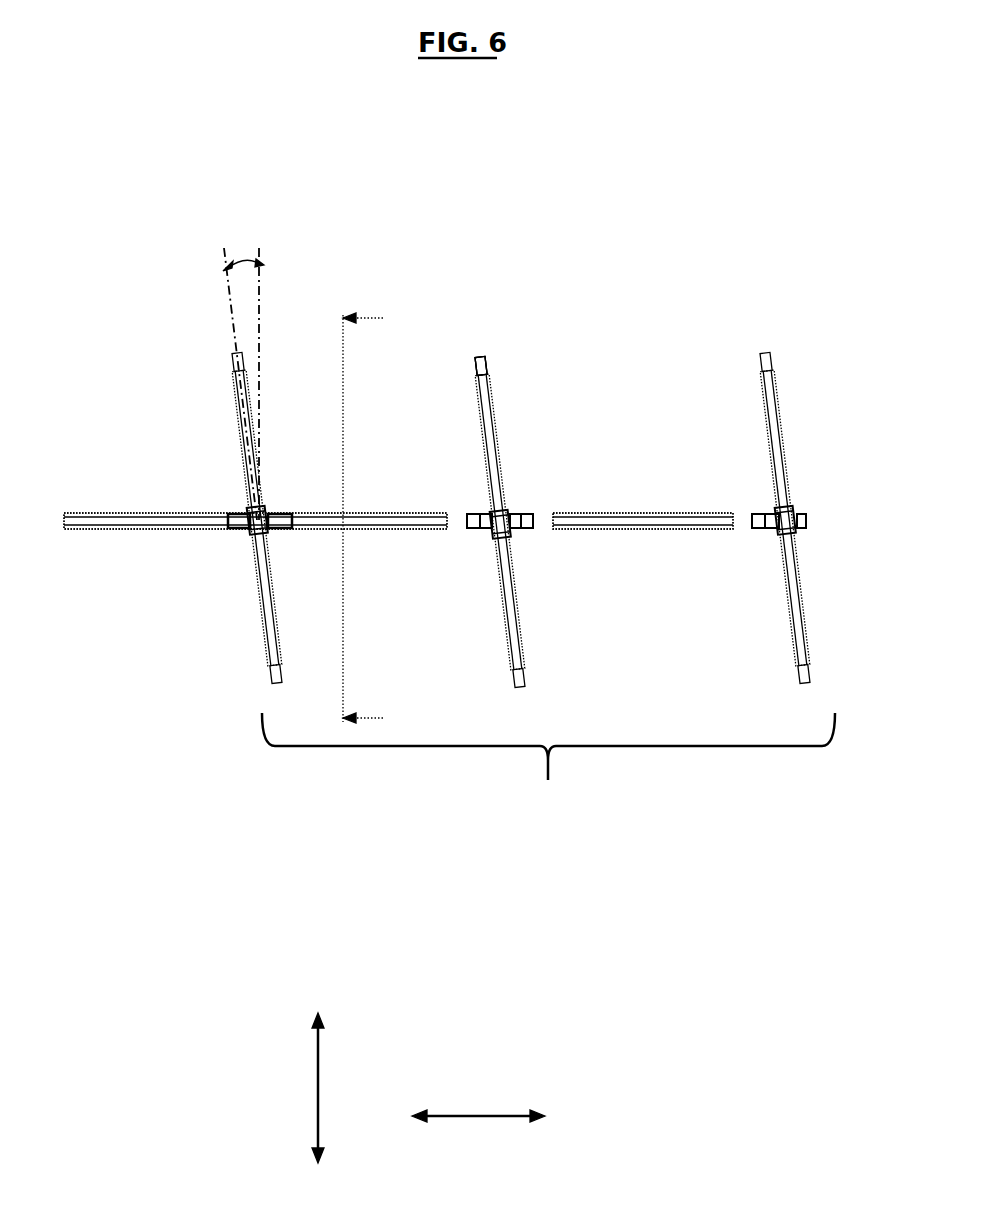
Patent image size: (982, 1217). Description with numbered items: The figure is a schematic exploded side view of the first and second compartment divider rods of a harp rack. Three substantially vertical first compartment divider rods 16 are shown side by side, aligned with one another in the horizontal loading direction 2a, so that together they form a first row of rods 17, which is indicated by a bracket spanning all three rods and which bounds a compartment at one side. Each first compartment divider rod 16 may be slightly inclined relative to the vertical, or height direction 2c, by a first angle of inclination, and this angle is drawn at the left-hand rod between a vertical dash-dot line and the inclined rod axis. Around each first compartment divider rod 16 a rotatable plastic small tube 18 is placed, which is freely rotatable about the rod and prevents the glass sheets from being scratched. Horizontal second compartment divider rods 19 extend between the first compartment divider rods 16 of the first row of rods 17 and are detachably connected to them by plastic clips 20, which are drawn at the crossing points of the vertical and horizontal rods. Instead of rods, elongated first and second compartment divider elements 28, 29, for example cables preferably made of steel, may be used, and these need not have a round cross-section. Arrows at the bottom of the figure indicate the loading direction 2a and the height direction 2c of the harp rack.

The first compartment divider element 28 is at (482, 357).
The first compartment divider rod 16 is at (481, 365).
The plastic small tube 18 is at (490, 440).
The plastic clip 20 is at (535, 515).
The second compartment divider element 29 is at (144, 521).
The second compartment divider rod 19 is at (398, 521).
The first row of rods 17 is at (541, 496).
The height direction 2c is at (332, 1088).
The loading direction 2a is at (478, 1103).